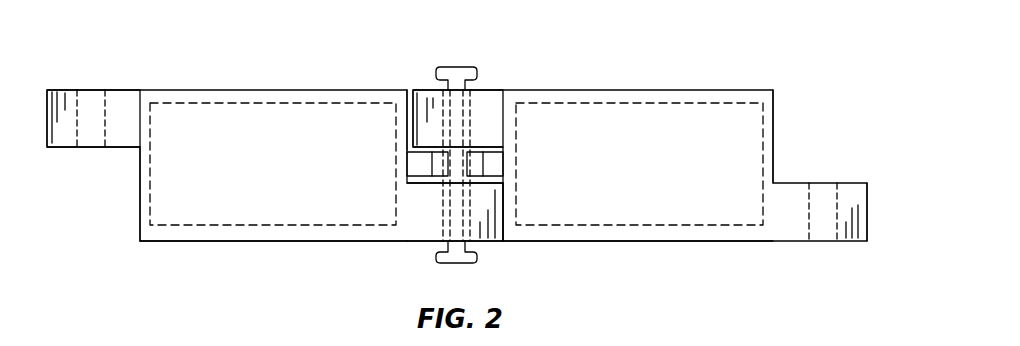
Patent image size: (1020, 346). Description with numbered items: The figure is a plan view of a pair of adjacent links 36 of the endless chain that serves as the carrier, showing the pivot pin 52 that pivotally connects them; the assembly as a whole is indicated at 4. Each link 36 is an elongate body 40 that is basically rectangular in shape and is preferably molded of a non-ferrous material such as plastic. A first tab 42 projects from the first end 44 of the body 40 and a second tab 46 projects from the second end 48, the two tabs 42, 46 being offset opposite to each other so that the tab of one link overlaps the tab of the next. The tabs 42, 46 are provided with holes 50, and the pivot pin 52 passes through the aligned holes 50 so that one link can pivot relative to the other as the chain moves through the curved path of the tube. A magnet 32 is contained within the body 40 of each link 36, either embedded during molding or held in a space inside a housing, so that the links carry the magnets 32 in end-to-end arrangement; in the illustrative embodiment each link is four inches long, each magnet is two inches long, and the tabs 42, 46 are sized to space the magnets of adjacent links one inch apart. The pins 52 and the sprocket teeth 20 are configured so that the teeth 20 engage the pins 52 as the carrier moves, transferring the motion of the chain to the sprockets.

The floor panel assembly 4 is at (583, 242).
The sprocket teeth 20 is at (420, 165).
The magnet 32 is at (272, 110).
The link 36 is at (273, 242).
The elongate body 40 is at (330, 242).
The first tab 42 is at (423, 242).
The first end 44 is at (405, 89).
The second tab 46 is at (57, 88).
The second end 48 is at (140, 202).
The holes 50 is at (92, 148).
The pivot pin 52 is at (455, 67).